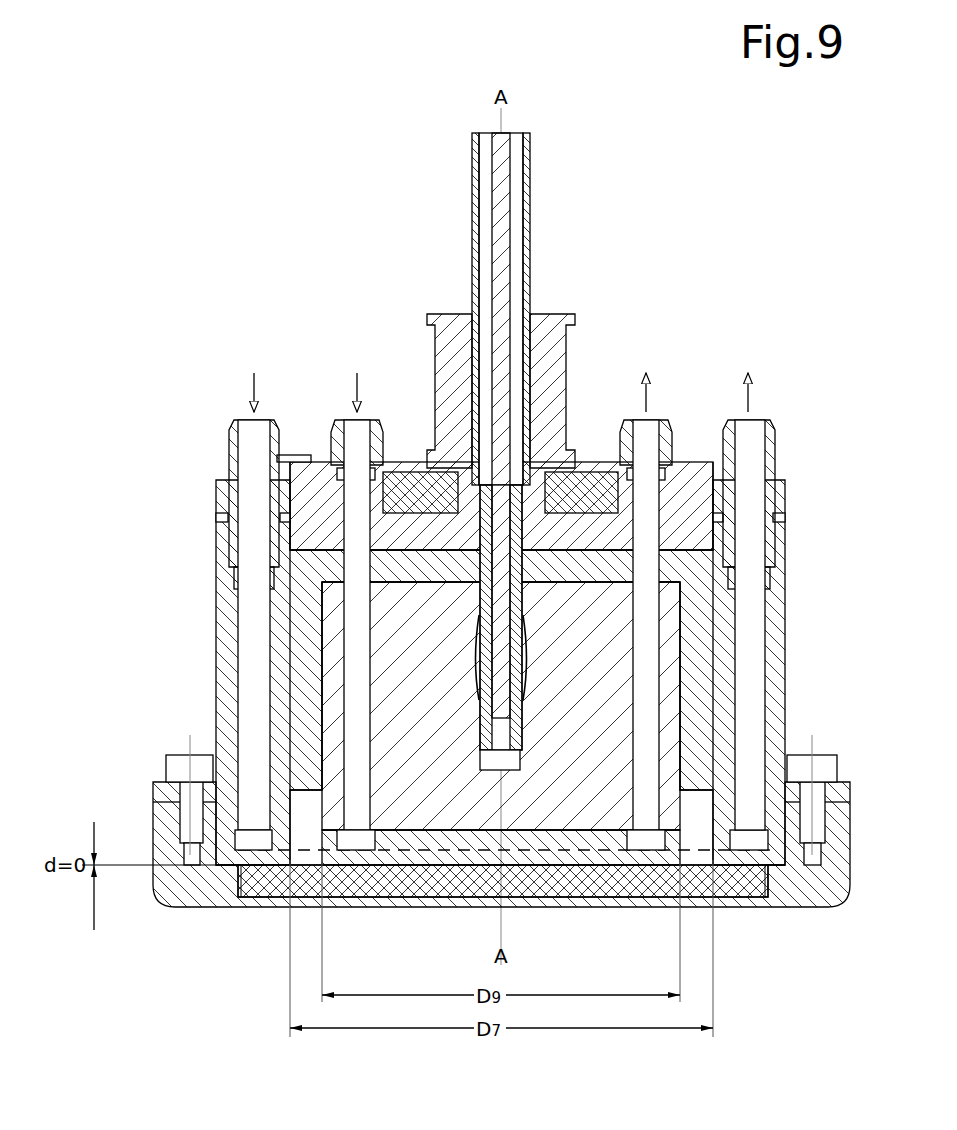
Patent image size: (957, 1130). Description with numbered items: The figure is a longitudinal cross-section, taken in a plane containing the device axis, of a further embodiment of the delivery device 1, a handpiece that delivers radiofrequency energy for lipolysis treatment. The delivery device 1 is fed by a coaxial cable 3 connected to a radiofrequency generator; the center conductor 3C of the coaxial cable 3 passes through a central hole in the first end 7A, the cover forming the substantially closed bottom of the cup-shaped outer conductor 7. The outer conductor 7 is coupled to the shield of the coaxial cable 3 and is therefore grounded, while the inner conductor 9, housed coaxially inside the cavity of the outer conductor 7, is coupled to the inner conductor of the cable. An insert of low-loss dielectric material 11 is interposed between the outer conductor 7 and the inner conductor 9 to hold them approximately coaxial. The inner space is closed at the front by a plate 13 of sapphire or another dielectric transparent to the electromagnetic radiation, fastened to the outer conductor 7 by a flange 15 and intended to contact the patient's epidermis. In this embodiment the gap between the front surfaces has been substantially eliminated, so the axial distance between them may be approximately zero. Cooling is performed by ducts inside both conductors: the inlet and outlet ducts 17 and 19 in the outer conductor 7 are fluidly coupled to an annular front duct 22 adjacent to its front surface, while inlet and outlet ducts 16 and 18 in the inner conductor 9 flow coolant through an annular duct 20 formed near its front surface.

The delivery device 1 is at (165, 557).
The coaxial cable 3 is at (470, 190).
The center conductor of the coaxial cable 3C is at (500, 232).
The outer conductor 7 is at (215, 635).
The first end of the outer conductor 7A is at (683, 470).
The inner conductor 9 is at (500, 700).
The low-loss dielectric material insert 11 is at (692, 637).
The plate 13 is at (583, 880).
The flange 15 is at (170, 890).
The inlet duct of the inner conductor 16 is at (335, 437).
The inlet duct 17 is at (228, 440).
The outlet duct of the inner conductor 18 is at (620, 437).
The outlet duct 19 is at (775, 440).
The annular duct 20 is at (357, 842).
The annular front duct 22 is at (255, 840).